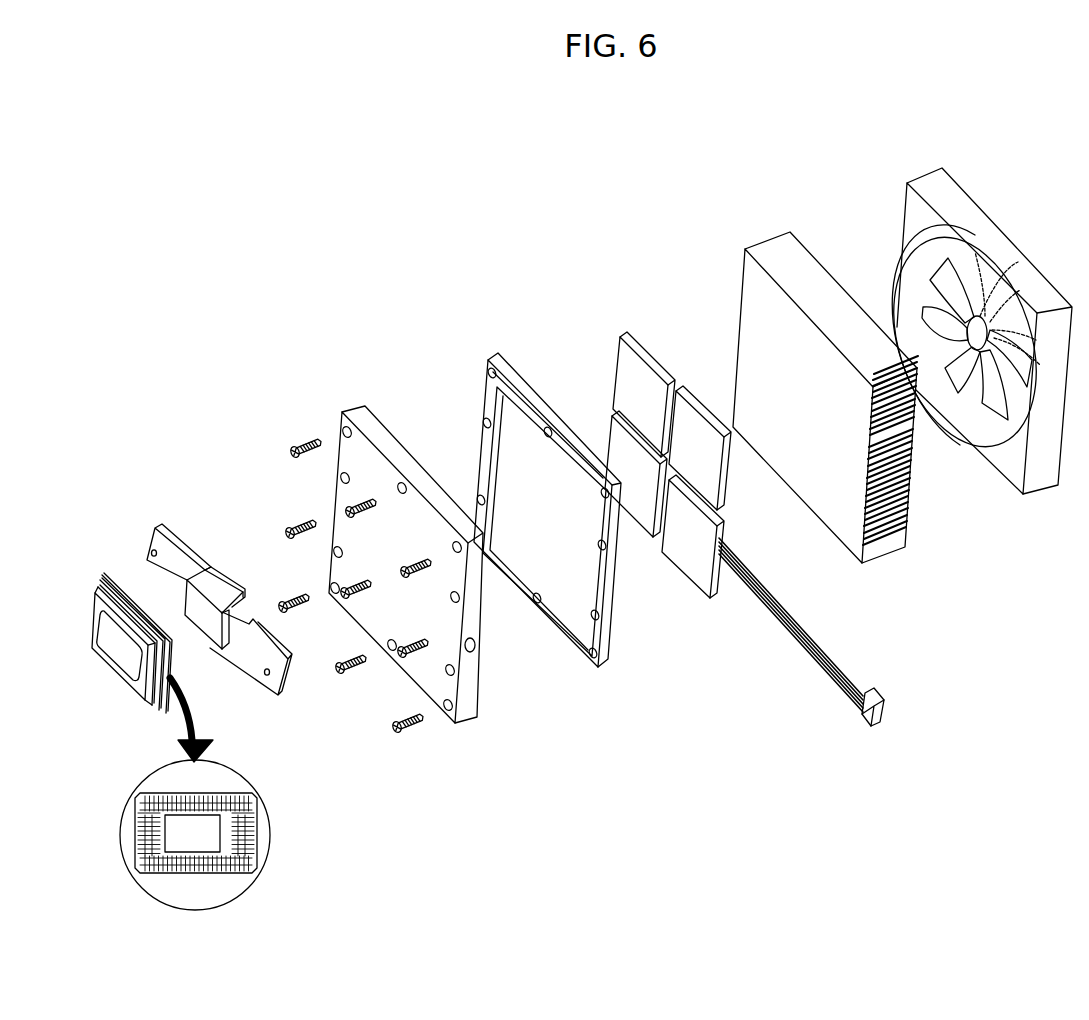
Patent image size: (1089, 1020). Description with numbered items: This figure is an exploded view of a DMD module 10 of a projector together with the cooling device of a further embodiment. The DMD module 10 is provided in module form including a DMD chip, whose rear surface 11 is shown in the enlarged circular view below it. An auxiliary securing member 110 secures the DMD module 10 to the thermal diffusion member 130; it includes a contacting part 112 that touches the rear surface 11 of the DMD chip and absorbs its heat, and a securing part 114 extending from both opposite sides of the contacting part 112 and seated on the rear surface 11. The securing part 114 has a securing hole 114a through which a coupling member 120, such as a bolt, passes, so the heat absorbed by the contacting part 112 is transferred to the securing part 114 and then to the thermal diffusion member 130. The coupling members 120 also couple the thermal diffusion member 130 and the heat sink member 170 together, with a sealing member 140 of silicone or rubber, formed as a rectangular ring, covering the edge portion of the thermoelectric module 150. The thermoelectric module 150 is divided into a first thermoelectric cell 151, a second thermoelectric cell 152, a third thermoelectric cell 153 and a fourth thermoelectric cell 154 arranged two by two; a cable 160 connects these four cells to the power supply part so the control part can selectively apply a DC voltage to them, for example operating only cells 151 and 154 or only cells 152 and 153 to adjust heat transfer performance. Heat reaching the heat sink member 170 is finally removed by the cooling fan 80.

The DMD module 10 is at (93, 565).
The rear surface 11 is at (208, 836).
The cooling fan 80 is at (918, 166).
The securing member 110 is at (198, 590).
The contacting part 112 is at (210, 650).
The securing part 114 is at (158, 523).
The securing hole 114a is at (152, 550).
The coupling member 120 is at (303, 436).
The thermal diffusion member 130 is at (348, 398).
The sealing member 140 is at (488, 345).
The thermoelectric module 150 is at (657, 450).
The first thermoelectric cell 151 is at (650, 358).
The second thermoelectric cell 152 is at (692, 400).
The third thermoelectric cell 153 is at (640, 528).
The fourth thermoelectric cell 154 is at (690, 580).
The cable 160 is at (795, 640).
The heat sink member 170 is at (765, 228).